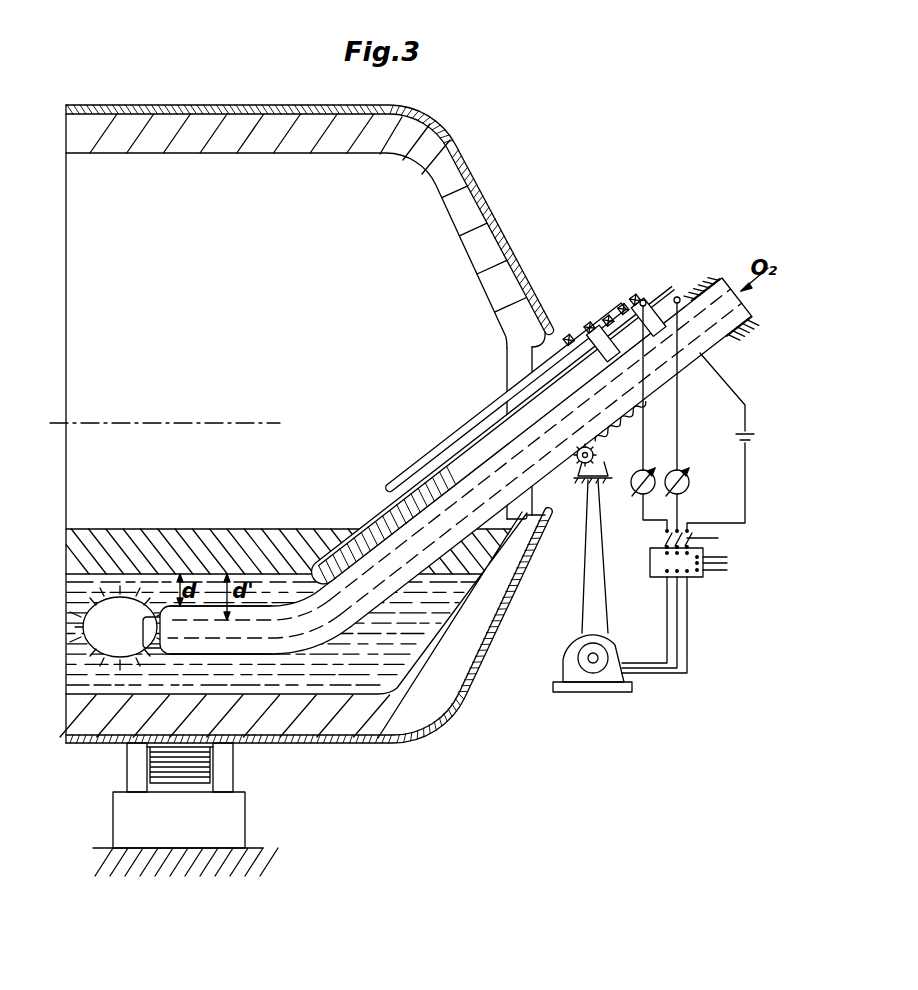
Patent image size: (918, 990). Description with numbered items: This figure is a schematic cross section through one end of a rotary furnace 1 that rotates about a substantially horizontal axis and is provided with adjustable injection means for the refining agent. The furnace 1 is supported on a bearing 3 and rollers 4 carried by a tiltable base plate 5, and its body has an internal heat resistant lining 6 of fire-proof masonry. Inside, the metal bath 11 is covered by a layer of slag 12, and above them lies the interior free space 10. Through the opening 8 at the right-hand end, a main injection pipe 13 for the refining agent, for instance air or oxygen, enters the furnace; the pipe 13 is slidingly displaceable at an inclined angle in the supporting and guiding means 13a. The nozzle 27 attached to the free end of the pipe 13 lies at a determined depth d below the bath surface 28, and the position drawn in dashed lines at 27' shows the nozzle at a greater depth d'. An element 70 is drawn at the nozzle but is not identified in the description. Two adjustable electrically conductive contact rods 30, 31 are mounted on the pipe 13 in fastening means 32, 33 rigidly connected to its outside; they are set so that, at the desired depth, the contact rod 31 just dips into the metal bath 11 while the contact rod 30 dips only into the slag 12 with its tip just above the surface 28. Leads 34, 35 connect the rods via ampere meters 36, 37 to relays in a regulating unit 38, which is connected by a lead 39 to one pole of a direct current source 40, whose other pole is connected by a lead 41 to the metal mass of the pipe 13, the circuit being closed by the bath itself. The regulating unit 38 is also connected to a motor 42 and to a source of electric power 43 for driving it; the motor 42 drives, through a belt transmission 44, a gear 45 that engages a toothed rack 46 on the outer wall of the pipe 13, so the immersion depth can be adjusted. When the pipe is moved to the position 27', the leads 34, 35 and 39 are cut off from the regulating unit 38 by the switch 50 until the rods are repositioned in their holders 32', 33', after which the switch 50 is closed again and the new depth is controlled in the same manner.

The rotary furnace 1 is at (470, 190).
The bearing 3 is at (227, 810).
The roller 4 is at (135, 765).
The tiltable base plate 5 is at (185, 862).
The heat resistant lining 6 is at (297, 143).
The opening 8 is at (542, 358).
The interior free space 10 is at (165, 355).
The metal bath 11 is at (271, 633).
The layer of slag 12 is at (116, 543).
The main injection pipe 13 is at (456, 507).
The supporting and guiding means 13a is at (707, 343).
The nozzle 27 is at (250, 630).
The displaced nozzle position 27' is at (238, 717).
The bath surface 28 is at (180, 604).
The contact rod 30 is at (505, 398).
The contact rod 31 is at (497, 438).
The fastening means 32 is at (603, 343).
The holder 32' is at (568, 339).
The fastening means 33 is at (648, 317).
The holder 33' is at (608, 320).
The lead 34 is at (678, 451).
The lead 35 is at (644, 446).
The ampere meter 36 is at (691, 492).
The ampere meter 37 is at (624, 492).
The regulating unit 38 is at (650, 563).
The lead 39 is at (748, 490).
The direct current source 40 is at (756, 437).
The lead 41 is at (740, 393).
The motor 42 is at (568, 660).
The source of electric power 43 is at (733, 565).
The belt transmission 44 is at (582, 604).
The gear 45 is at (604, 458).
The toothed rack 46 is at (584, 486).
The switch 50 is at (717, 540).
The gas bubble 70 is at (125, 645).